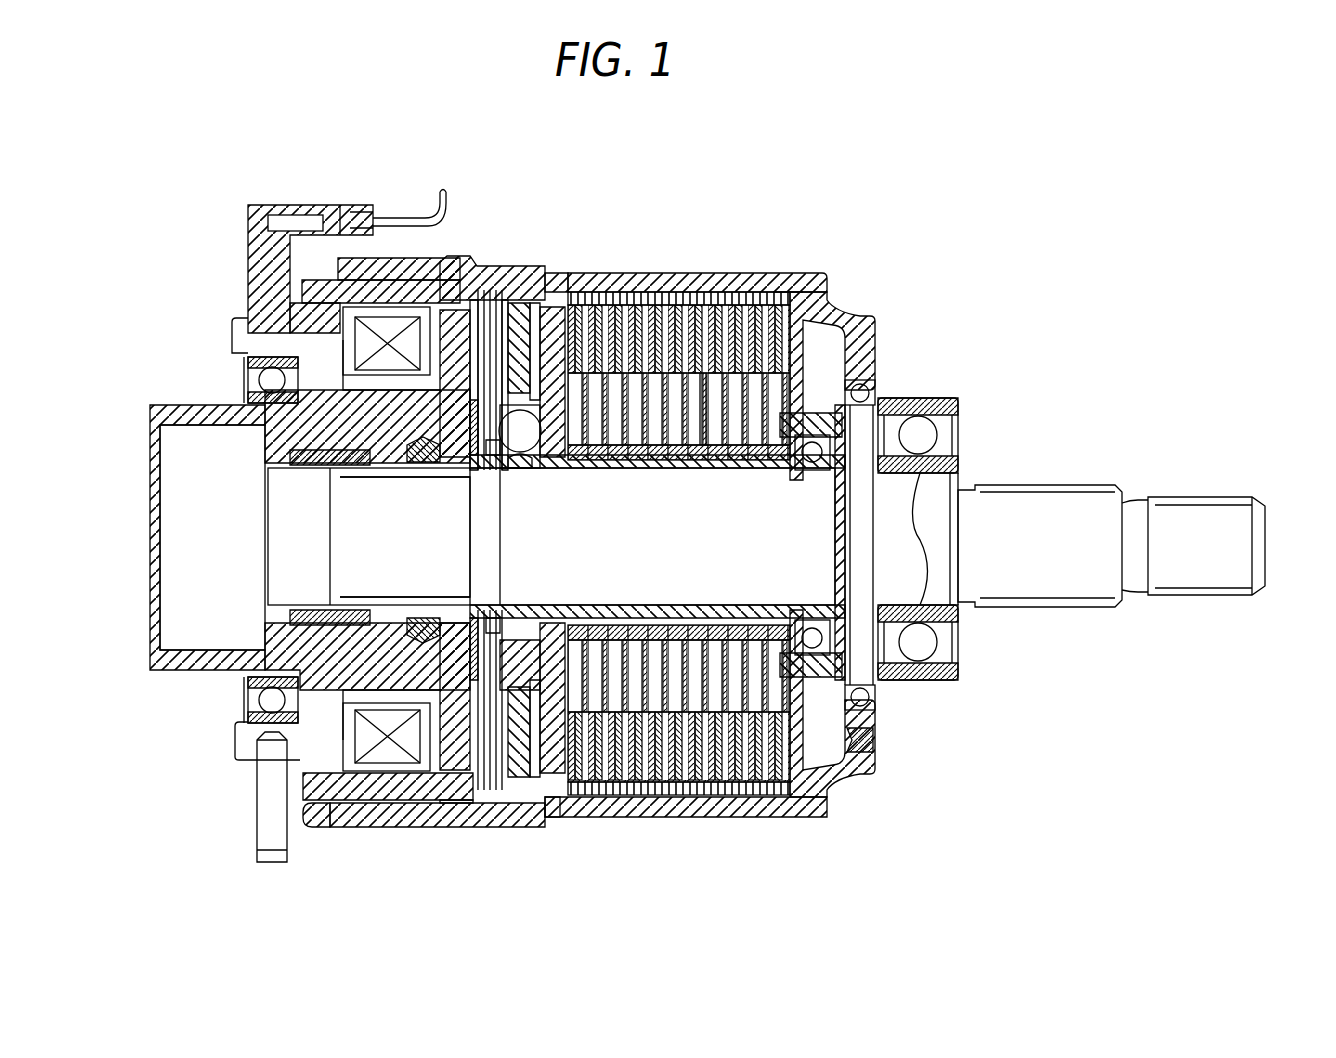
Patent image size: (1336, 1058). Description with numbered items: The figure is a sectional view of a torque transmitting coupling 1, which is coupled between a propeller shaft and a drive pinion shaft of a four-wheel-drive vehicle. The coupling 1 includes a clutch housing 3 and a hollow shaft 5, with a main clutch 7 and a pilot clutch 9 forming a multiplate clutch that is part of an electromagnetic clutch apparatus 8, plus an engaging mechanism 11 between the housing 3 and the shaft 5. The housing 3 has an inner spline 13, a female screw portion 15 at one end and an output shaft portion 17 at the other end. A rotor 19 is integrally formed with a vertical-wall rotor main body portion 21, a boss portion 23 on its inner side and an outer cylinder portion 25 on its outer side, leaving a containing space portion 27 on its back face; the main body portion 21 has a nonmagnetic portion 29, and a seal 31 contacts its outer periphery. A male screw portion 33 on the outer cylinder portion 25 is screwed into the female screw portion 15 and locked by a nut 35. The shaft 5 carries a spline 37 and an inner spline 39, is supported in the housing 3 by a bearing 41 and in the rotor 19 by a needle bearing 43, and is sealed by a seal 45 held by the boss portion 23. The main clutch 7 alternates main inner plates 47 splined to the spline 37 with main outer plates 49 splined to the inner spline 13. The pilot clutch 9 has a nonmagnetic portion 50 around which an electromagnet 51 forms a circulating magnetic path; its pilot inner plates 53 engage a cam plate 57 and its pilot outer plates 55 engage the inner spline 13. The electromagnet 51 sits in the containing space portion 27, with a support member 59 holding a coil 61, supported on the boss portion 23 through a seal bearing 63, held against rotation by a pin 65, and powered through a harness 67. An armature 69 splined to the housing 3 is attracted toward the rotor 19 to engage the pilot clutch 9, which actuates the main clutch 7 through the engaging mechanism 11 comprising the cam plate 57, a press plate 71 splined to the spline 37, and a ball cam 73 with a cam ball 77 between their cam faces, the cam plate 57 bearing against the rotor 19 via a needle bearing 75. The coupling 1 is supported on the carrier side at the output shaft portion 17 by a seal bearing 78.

The torque transmitting coupling 1 is at (721, 222).
The clutch housing 3 is at (612, 273).
The shaft 5 is at (258, 510).
The main clutch 7 is at (735, 298).
The electromagnetic clutch apparatus 8 is at (486, 300).
The pilot clutch 9 is at (492, 290).
The engaging mechanism 11 is at (543, 470).
The inner spline 13 is at (648, 303).
The female screw portion 15 is at (380, 285).
The output shaft portion 17 is at (1043, 515).
The rotor 19 is at (420, 262).
The rotor main body portion 21 is at (512, 330).
The boss portion 23 is at (256, 372).
The outer cylinder portion 25 is at (333, 322).
The containing space portion 27 is at (452, 330).
The nonmagnetic portion 29 is at (452, 828).
The seal 31 is at (432, 830).
The male screw portion 33 is at (371, 815).
The nut 35 is at (324, 830).
The spline 37 is at (662, 462).
The inner spline 39 is at (380, 488).
The bearing 41 is at (822, 462).
The needle bearing 43 is at (300, 470).
The seal 45 is at (424, 465).
The main inner plates 47 is at (705, 460).
The main outer plates 49 is at (680, 300).
The nonmagnetic portion 50 is at (550, 300).
The electromagnet 51 is at (262, 282).
The pilot inner plates 53 is at (500, 640).
The pilot outer plates 55 is at (510, 812).
The cam plate 57 is at (492, 462).
The support member 59 is at (323, 733).
The coil 61 is at (370, 740).
The seal bearing 63 is at (250, 704).
The pin 65 is at (256, 873).
The harness 67 is at (383, 215).
The armature 69 is at (546, 295).
The press plate 71 is at (565, 280).
The ball cam 73 is at (528, 452).
The needle bearing 75 is at (470, 462).
The cam ball 77 is at (528, 565).
The seal bearing 78 is at (936, 396).